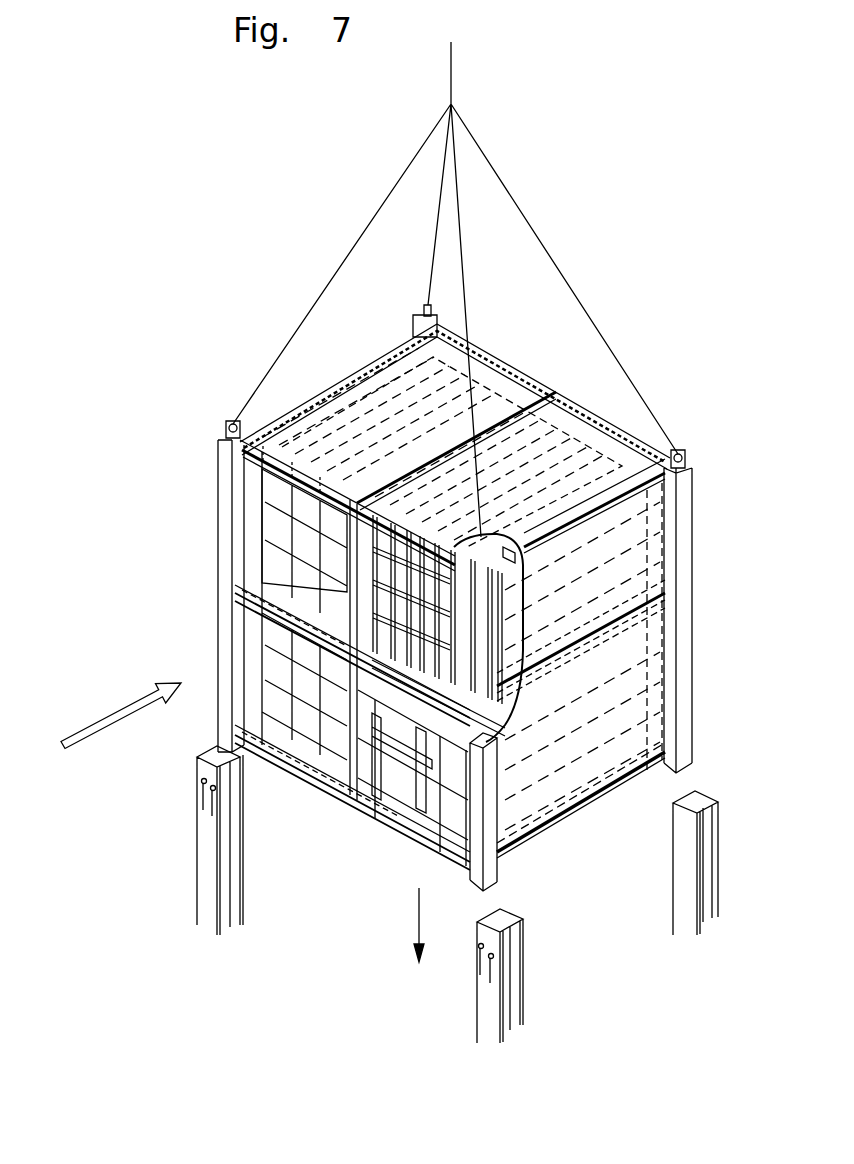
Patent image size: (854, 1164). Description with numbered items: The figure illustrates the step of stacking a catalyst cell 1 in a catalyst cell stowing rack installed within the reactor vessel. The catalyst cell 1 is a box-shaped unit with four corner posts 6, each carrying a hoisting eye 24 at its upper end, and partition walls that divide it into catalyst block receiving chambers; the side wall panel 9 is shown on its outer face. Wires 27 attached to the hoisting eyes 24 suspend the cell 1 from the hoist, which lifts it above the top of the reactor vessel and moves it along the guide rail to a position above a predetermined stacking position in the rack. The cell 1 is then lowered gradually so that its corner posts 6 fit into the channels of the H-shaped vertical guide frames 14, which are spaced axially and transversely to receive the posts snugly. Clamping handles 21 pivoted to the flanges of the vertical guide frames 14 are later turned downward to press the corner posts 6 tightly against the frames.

The catalyst cell 1 is at (708, 616).
The corner post 6 is at (683, 498).
The side wall panel 9 is at (280, 562).
The vertical guide frame 14 is at (203, 847).
The clamping handle 21 is at (200, 800).
The hoisting eye 24 is at (224, 426).
The wire 27 is at (345, 250).